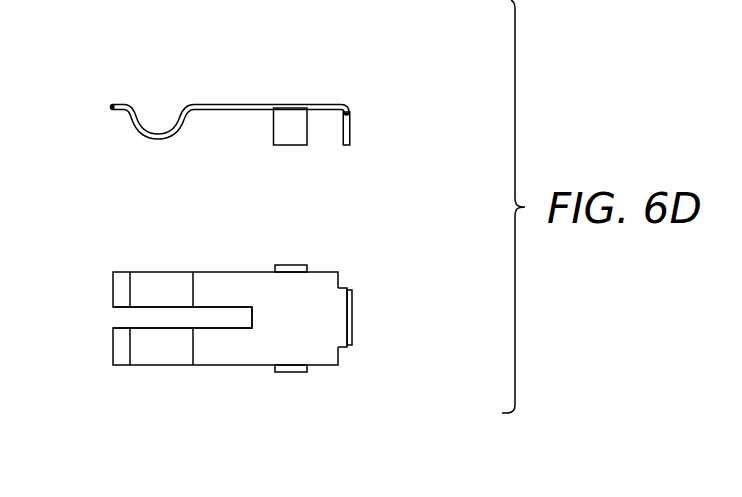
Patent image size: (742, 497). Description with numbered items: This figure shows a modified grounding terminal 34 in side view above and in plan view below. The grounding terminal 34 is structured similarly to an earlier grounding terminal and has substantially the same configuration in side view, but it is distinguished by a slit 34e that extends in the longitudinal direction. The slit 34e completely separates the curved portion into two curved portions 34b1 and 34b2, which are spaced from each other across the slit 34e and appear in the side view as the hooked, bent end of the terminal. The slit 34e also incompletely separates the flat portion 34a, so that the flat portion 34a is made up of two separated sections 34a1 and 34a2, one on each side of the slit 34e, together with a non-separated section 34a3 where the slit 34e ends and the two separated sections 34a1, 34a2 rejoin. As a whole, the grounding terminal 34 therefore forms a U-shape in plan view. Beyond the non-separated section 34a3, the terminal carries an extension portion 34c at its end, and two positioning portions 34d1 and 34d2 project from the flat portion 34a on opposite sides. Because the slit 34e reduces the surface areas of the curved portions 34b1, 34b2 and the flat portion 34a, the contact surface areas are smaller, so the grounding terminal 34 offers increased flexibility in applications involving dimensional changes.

The grounding terminal 34 is at (98, 91).
The flat portion 34a is at (307, 223).
The separated section 34a1 is at (223, 287).
The separated section 34a2 is at (240, 24).
The non-separated section 34a3 is at (315, 318).
The curved portion 34b1 is at (158, 285).
The curved portion 34b2 is at (157, 131).
The extension portion 34c is at (350, 125).
The positioning portion 34d1 is at (290, 263).
The positioning portion 34d2 is at (290, 117).
The slit 34e is at (116, 322).